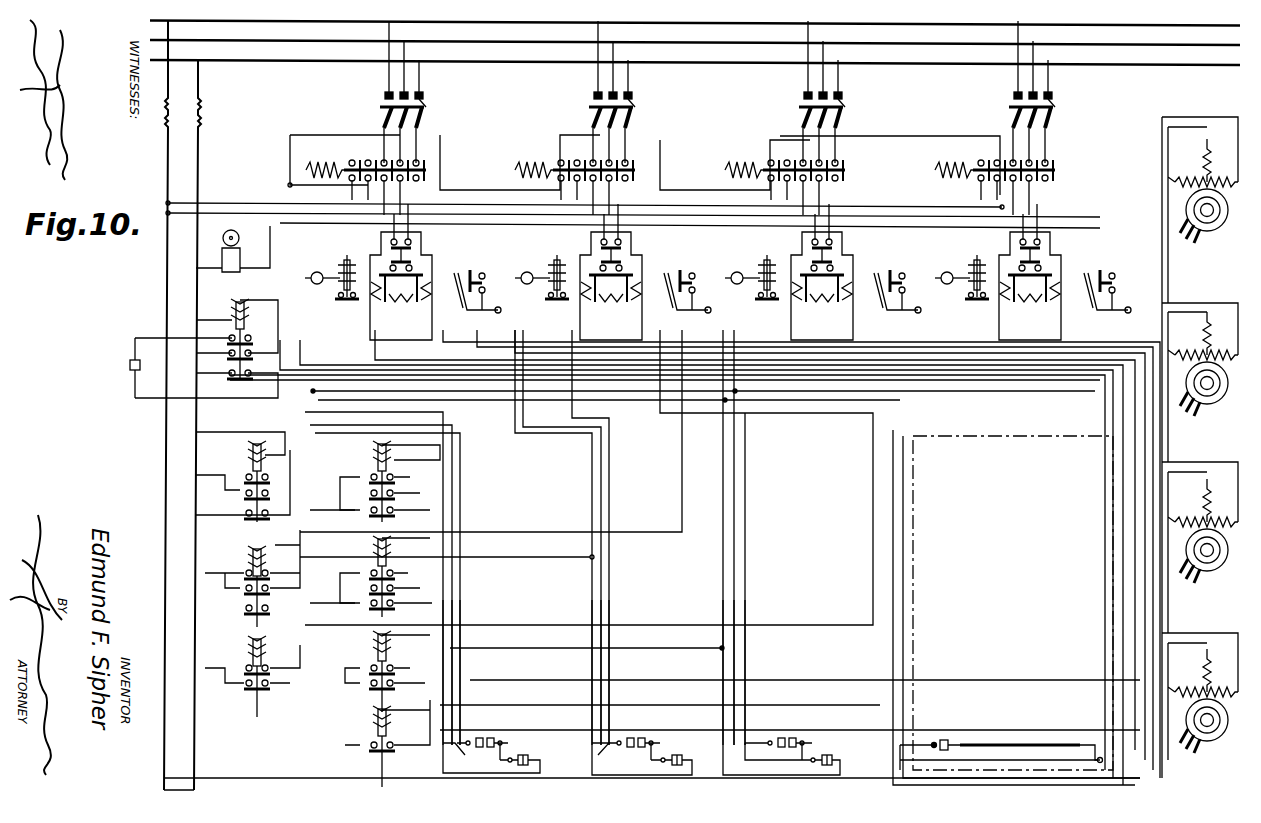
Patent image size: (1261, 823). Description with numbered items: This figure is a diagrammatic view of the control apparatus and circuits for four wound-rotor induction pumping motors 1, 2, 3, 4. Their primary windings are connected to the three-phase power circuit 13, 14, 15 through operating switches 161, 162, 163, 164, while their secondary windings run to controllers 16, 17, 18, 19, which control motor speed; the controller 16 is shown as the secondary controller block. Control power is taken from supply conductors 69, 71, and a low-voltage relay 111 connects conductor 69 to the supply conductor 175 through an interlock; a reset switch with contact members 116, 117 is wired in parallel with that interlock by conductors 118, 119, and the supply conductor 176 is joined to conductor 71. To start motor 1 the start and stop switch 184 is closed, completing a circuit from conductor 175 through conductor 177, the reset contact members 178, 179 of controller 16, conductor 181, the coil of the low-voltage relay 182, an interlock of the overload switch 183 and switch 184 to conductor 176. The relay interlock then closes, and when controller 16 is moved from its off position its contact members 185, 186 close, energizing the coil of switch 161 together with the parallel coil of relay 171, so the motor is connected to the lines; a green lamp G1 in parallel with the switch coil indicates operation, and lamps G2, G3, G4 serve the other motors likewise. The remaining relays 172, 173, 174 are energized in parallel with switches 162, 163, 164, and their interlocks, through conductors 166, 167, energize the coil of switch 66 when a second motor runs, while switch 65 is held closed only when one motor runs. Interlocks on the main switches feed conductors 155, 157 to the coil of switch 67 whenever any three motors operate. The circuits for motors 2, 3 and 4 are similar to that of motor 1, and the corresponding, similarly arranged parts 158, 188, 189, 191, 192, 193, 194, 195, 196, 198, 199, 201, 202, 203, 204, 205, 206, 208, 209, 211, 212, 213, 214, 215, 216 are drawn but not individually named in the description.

The power circuit conductor 13 is at (915, 24).
The power circuit conductor 14 is at (890, 45).
The power circuit conductor 15 is at (928, 66).
The controller 16 is at (1020, 628).
The controller 17 is at (812, 692).
The controller 18 is at (662, 692).
The controller 19 is at (514, 692).
The pumping motor 1 is at (1225, 252).
The pumping motor 2 is at (1225, 422).
The pumping motor 3 is at (1225, 592).
The pumping motor 4 is at (1225, 767).
The switch 65 is at (228, 642).
The switch 66 is at (228, 552).
The switch 67 is at (228, 464).
The supply conductor 69 is at (166, 455).
The supply conductor 71 is at (196, 481).
The low-voltage relay 111 is at (272, 294).
The reset switch contact member 116 is at (130, 362).
The reset switch contact member 117 is at (133, 372).
The conductor 118 is at (160, 336).
The conductor 119 is at (148, 399).
The conductor 155 is at (460, 190).
The conductor 157 is at (290, 172).
The conductor 158 is at (715, 140).
The operating switch 161 is at (994, 121).
The operating switch 162 is at (784, 121).
The operating switch 163 is at (574, 121).
The operating switch 164 is at (345, 121).
The conductor 166 is at (327, 601).
The conductor 167 is at (327, 510).
The relay 171 is at (343, 717).
The relay 172 is at (343, 637).
The relay 173 is at (352, 549).
The relay 174 is at (355, 464).
The supply conductor 175 is at (212, 398).
The supply conductor 176 is at (668, 400).
The conductor 177 is at (1000, 781).
The reset contact member 178 is at (1104, 758).
The reset contact member 179 is at (1085, 742).
The conductor 181 is at (925, 780).
The low-voltage relay 182 is at (990, 252).
The overload switch 183 is at (1046, 312).
The start and stop switch 184 is at (1135, 240).
The contact member 185 is at (948, 740).
The contact member 186 is at (934, 742).
The contact 188 is at (835, 758).
The contact 189 is at (829, 755).
The conductor 191 is at (744, 718).
The coil 192 is at (780, 252).
The contactor 193 is at (838, 324).
The switch 194 is at (925, 267).
The contact 195 is at (792, 738).
The conductor 196 is at (775, 762).
The contact 198 is at (685, 758).
The contact 199 is at (679, 755).
The conductor 201 is at (610, 718).
The coil 202 is at (570, 252).
The contactor 203 is at (628, 324).
The switch 204 is at (720, 264).
The contact 205 is at (641, 738).
The conductor 206 is at (600, 770).
The contact 208 is at (535, 758).
The contact 209 is at (518, 765).
The conductor 211 is at (460, 718).
The coil 212 is at (360, 330).
The contactor 213 is at (417, 324).
The switch 214 is at (508, 264).
The contact 215 is at (500, 738).
The conductor 216 is at (455, 760).
The green lamp G1 is at (940, 272).
The green lamp G2 is at (732, 283).
The green lamp G3 is at (522, 283).
The green lamp G4 is at (322, 270).